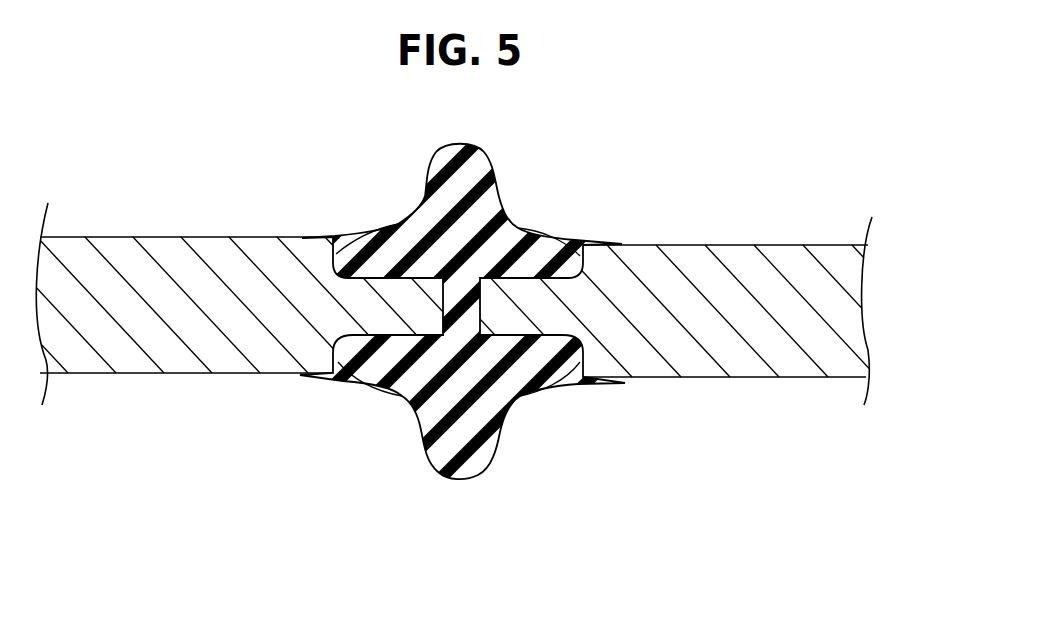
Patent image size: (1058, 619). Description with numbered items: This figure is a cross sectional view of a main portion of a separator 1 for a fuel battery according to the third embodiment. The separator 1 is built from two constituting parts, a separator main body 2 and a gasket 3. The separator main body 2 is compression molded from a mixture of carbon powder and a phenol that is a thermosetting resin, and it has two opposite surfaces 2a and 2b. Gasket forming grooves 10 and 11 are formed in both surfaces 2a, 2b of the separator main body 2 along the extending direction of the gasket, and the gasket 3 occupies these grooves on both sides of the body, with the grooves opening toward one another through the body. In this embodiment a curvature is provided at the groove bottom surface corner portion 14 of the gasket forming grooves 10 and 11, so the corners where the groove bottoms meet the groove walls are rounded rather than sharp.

The separator 1 is at (494, 302).
The separator main body 2 is at (782, 300).
The surface of the separator main body 2a is at (192, 237).
The surface of the separator main body 2b is at (203, 373).
The gasket 3 is at (470, 188).
The gasket forming groove 10 is at (372, 232).
The gasket forming groove 11 is at (353, 377).
The groove bottom surface corner portion 14 is at (573, 240).